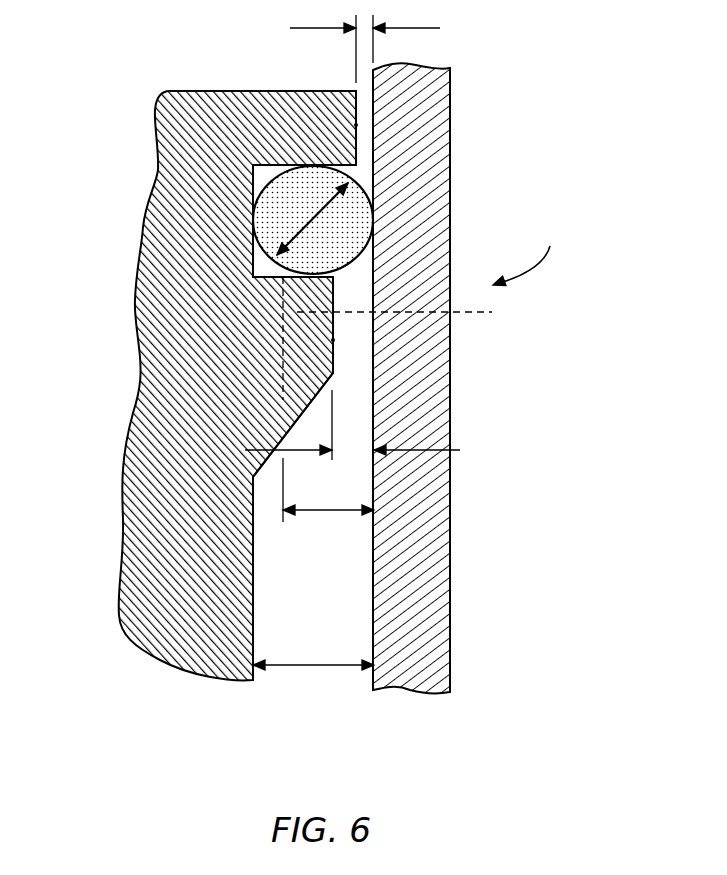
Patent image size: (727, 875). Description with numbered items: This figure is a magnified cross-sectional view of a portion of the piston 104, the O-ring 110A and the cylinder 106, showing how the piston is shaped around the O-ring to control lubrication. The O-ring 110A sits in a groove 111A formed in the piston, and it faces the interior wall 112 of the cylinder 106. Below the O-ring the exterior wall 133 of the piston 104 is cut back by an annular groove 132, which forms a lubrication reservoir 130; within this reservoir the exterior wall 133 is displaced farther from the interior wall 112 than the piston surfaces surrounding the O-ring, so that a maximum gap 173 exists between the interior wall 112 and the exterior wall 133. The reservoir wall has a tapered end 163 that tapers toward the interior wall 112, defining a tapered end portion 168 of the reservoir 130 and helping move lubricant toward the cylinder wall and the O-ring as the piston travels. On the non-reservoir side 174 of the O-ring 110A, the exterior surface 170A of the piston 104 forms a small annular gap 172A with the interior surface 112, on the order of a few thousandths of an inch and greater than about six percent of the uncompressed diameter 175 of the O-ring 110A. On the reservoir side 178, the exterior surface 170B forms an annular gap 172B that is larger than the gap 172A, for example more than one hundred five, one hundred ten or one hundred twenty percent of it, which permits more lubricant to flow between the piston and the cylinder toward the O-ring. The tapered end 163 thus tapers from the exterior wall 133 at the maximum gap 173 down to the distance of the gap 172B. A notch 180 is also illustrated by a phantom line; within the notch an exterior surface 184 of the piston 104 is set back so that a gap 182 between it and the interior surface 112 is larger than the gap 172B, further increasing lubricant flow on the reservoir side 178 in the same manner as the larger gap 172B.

The piston 104 is at (167, 317).
The cylinder 106 is at (440, 640).
The O-ring 110A is at (273, 220).
The groove 111A is at (263, 173).
The interior wall of the cylinder 112 is at (373, 689).
The lubrication reservoir 130 is at (285, 552).
The annular groove 132 is at (253, 640).
The exterior wall of the piston 133 is at (253, 595).
The tapered end 163 is at (297, 373).
The tapered end portion of the reservoir 168 is at (310, 427).
The exterior surface on the non-reservoir side 170A is at (357, 125).
The exterior surface on the reservoir side 170B is at (333, 340).
The annular gap 172A is at (440, 28).
The annular gap 172B is at (437, 448).
The maximum gap 173 is at (310, 668).
The non-reservoir side 174 is at (378, 99).
The diameter of the O-ring 175 is at (317, 220).
The reservoir side 178 is at (531, 253).
The notch 180 is at (274, 352).
The gap 182 is at (340, 510).
The exterior surface within the notches 184 is at (412, 311).